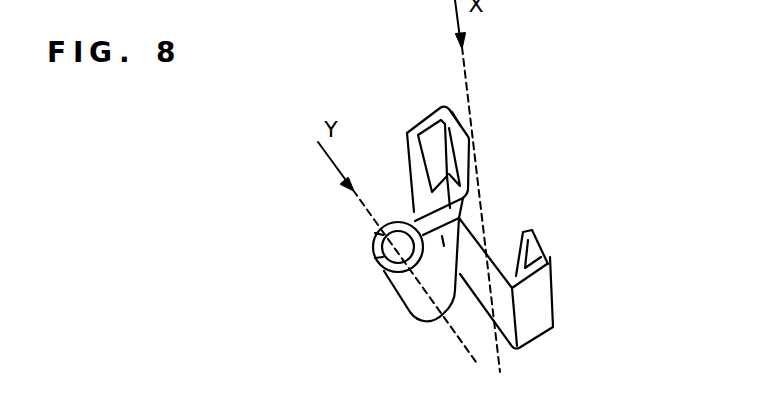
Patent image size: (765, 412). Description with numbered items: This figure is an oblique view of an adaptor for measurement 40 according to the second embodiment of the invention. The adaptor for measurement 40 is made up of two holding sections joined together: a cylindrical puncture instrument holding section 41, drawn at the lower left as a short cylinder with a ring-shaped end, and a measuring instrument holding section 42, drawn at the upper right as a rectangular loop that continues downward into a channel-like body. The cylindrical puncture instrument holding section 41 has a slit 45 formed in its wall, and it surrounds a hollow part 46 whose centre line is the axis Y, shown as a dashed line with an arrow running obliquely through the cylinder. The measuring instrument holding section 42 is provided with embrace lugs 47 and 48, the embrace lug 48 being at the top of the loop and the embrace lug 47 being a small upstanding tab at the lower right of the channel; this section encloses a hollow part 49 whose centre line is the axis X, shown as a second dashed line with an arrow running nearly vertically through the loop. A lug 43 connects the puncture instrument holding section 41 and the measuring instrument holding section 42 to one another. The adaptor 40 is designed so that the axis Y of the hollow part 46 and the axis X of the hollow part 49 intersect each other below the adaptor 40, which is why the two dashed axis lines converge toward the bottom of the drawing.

The adaptor for measurement 40 is at (500, 131).
The cylindrical puncture instrument holding section 41 is at (418, 297).
The measuring instrument holding section 42 is at (406, 157).
The lug 43 is at (418, 218).
The slit 45 is at (376, 259).
The hollow part 46 is at (376, 232).
The embrace lug 47 is at (544, 257).
The embrace lug 48 is at (457, 127).
The hollow part 49 is at (497, 230).